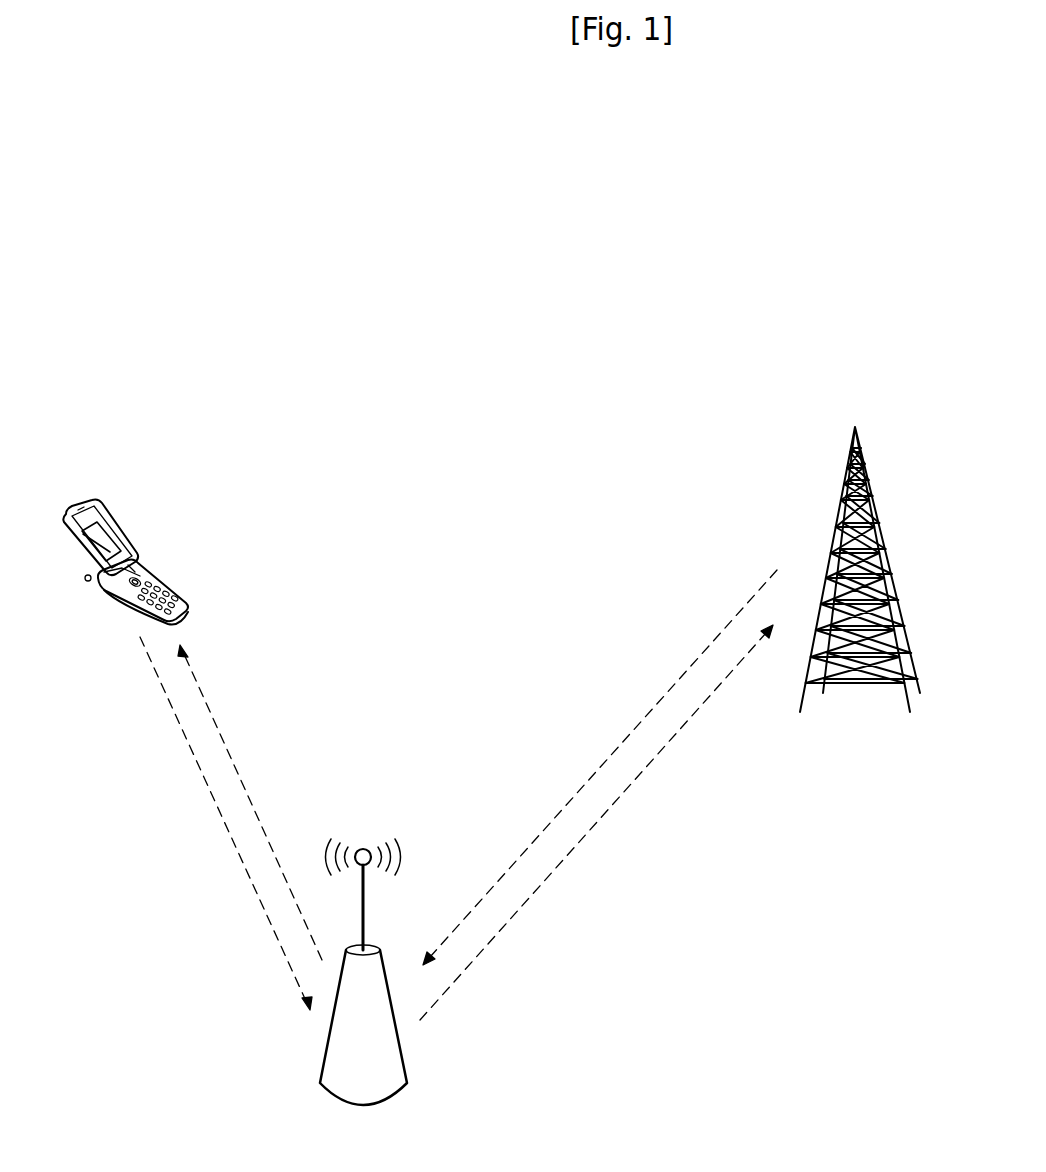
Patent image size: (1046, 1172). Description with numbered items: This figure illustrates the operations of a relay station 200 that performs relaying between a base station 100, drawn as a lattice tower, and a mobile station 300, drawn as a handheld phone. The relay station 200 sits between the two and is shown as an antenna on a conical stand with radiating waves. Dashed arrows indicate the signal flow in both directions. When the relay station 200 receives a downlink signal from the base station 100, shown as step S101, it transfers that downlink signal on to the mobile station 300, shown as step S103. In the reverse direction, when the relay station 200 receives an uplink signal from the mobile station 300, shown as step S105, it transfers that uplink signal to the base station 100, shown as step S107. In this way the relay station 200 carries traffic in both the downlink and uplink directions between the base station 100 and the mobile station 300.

The base station 100 is at (855, 423).
The relay station 200 is at (363, 845).
The mobile station 300 is at (112, 517).
The downlink signal reception step S101 is at (623, 742).
The downlink signal transfer step S103 is at (218, 735).
The uplink signal reception step S105 is at (218, 808).
The uplink signal transfer step S107 is at (597, 822).